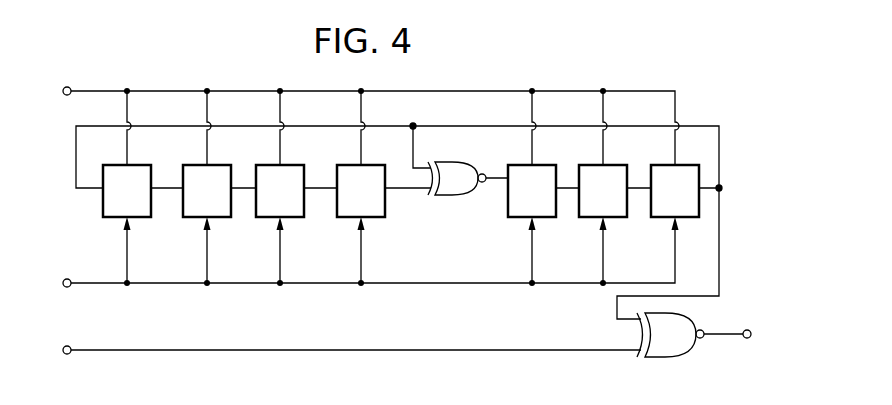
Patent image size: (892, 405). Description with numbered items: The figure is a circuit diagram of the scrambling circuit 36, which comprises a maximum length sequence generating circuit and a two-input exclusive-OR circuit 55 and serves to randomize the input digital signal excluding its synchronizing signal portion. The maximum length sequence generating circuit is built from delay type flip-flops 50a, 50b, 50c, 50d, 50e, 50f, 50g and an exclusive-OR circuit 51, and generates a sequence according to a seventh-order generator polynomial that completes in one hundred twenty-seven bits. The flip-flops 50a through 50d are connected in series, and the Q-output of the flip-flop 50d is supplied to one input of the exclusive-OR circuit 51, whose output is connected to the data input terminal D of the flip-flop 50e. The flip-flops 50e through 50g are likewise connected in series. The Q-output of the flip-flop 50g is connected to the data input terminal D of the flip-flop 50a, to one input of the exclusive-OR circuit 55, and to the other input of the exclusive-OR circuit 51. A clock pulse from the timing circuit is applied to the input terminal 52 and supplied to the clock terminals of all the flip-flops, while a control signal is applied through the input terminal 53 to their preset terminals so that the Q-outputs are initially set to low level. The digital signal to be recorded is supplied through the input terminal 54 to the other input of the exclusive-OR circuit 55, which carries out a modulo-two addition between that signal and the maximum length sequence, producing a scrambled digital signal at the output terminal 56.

The scrambling circuit 36 is at (262, 73).
The delay type flip-flop 50a is at (103, 206).
The delay type flip-flop 50b is at (196, 218).
The delay type flip-flop 50c is at (273, 218).
The delay type flip-flop 50d is at (338, 205).
The delay type flip-flop 50e is at (509, 205).
The delay type flip-flop 50f is at (580, 205).
The delay type flip-flop 50g is at (653, 205).
The exclusive-OR circuit 51 is at (448, 197).
The input terminal 52 is at (66, 279).
The input terminal 53 is at (67, 87).
The input terminal 54 is at (67, 346).
The exclusive-OR circuit 55 is at (667, 357).
The output terminal 56 is at (747, 338).